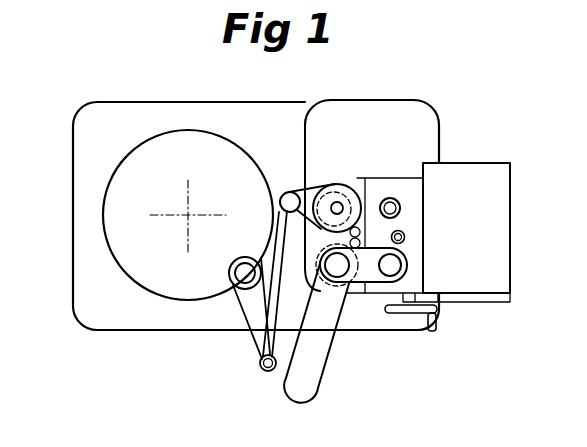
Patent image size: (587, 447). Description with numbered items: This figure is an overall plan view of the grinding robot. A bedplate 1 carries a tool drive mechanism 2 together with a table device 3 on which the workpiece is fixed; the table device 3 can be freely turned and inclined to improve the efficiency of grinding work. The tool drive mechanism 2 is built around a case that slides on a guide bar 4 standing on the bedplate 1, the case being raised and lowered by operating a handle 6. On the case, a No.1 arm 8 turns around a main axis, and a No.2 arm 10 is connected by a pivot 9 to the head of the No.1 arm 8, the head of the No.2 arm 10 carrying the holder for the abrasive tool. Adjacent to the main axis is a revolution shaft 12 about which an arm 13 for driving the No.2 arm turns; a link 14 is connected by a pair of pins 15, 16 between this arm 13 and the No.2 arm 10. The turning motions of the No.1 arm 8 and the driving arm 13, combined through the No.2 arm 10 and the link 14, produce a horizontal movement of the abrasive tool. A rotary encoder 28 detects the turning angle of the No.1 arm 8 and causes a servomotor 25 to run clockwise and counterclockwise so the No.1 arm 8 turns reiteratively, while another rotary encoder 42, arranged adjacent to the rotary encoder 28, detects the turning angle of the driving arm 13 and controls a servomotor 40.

The bedplate 1 is at (117, 112).
The tool drive mechanism 2 is at (459, 127).
The table device 3 is at (124, 258).
The guide bar 4 is at (393, 265).
The handle 6 is at (432, 332).
The No.1 arm 8 is at (335, 345).
The pivot 9 is at (292, 394).
The No.2 arm 10 is at (245, 308).
The revolution shaft 12 is at (341, 203).
The arm for driving No.2 arm 13 is at (297, 190).
The link 14 is at (255, 259).
The pin 15 is at (264, 181).
The pin 16 is at (261, 365).
The servomotor 25 is at (288, 236).
The rotary encoder 28 is at (366, 242).
The servomotor 40 is at (332, 192).
The rotary encoder 42 is at (358, 227).